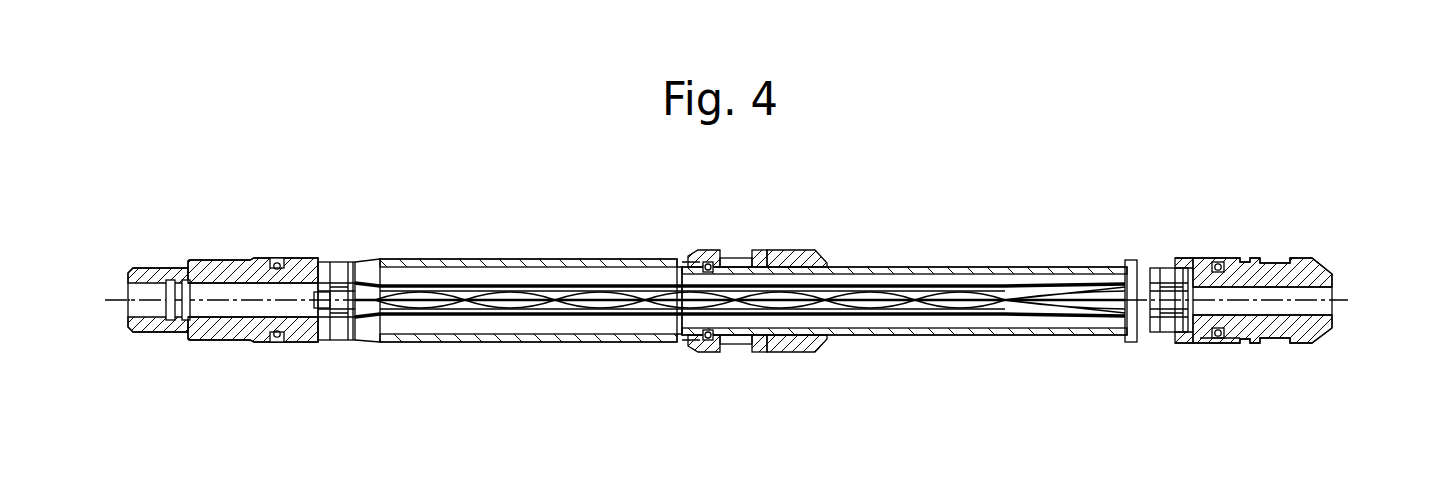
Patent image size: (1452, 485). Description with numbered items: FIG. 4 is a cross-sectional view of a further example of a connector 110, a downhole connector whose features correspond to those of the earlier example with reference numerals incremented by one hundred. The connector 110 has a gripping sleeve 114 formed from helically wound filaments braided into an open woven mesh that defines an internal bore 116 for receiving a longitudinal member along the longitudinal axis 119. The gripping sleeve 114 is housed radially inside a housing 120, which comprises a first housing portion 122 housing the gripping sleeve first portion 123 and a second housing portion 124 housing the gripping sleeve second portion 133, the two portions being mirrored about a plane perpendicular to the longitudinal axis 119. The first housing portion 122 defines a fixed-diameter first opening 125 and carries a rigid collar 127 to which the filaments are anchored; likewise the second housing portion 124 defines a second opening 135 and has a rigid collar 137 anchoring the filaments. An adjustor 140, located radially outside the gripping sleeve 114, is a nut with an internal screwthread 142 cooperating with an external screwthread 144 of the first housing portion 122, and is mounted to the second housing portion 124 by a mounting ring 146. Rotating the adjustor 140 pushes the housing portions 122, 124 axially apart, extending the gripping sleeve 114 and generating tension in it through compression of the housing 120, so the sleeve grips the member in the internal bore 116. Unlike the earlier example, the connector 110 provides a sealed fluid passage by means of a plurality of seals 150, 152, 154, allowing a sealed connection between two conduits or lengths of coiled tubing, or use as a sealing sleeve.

The connector 110 is at (266, 161).
The gripping sleeve 114 is at (665, 316).
The internal bore 116 is at (1122, 292).
The longitudinal axis 119 is at (143, 296).
The housing 120 is at (764, 408).
The first housing portion 122 is at (1040, 267).
The gripping sleeve first portion 123 is at (1186, 256).
The second housing portion 124 is at (490, 343).
The first opening 125 is at (1215, 337).
The rigid collar 127 is at (1170, 320).
The gripping sleeve second portion 133 is at (352, 256).
The second opening 135 is at (312, 306).
The rigid collar 137 is at (328, 320).
The adjustor 140 is at (787, 258).
The internal screwthread 142 is at (773, 350).
The external screwthread 144 is at (735, 262).
The mounting ring 146 is at (703, 254).
The seal 150 is at (277, 264).
The seal 152 is at (706, 266).
The seal 154 is at (1220, 330).